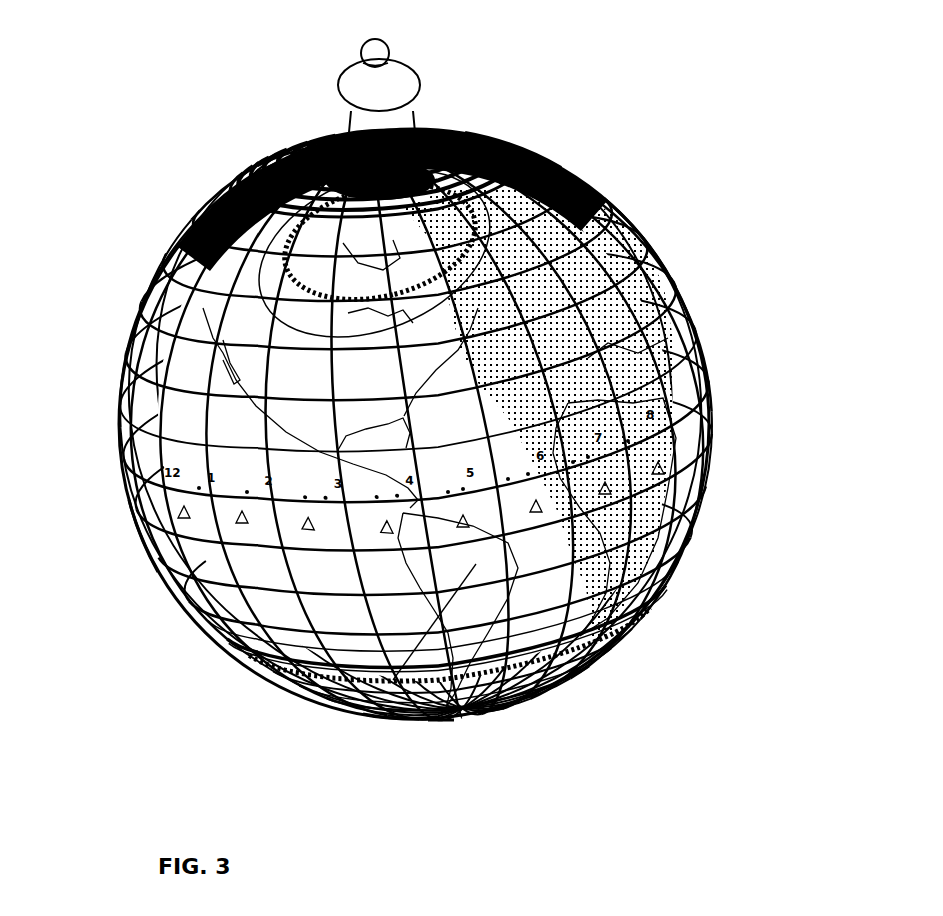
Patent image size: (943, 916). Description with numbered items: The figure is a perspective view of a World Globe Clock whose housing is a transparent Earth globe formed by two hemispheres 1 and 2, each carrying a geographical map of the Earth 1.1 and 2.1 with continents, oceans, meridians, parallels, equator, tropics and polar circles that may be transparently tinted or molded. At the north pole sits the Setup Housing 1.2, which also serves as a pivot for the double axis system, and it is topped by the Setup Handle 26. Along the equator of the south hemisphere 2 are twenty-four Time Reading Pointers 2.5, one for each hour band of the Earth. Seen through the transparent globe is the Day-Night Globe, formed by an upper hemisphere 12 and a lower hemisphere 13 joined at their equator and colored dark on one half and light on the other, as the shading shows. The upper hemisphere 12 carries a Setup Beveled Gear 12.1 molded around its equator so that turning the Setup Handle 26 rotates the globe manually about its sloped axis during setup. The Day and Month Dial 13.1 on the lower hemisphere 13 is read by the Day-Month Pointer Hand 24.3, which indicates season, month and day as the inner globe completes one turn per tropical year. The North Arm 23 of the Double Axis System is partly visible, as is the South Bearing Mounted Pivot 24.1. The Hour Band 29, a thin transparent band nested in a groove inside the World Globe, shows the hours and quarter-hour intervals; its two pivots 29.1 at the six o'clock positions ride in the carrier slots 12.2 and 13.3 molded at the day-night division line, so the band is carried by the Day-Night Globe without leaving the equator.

The north hemisphere of the Transparent Earth Globe 1 is at (613, 203).
The geographical Map of the Earth 1.1 is at (274, 376).
The Setup Housing 1.2 is at (410, 108).
The south hemisphere of the Transparent Earth Globe 2 is at (683, 535).
The geographical Map of the Earth on the south hemisphere 2.1 is at (360, 710).
The Time Reading Pointers 2.5 is at (147, 544).
The upper hemisphere of the Day-Night Globe 12 is at (151, 276).
The Setup Beveled Gear 12.1 is at (210, 203).
The Day-Night Globe Carrier Slot 12.2 is at (640, 357).
The south hemisphere of the Day-Night Globe 13 is at (457, 638).
The Day and Month Dial 13.1 is at (593, 648).
The Day-Night Globe Carrier Slot 13.3 is at (663, 573).
The North Arm 23 is at (487, 130).
The South Bearing Mounted Pivot 24.1 is at (483, 703).
The Day-Month Pointer Hand 24.3 is at (433, 710).
The Setup Handle 26 is at (400, 53).
The Hour Band 29 is at (677, 397).
The pivots 29.1 is at (683, 500).